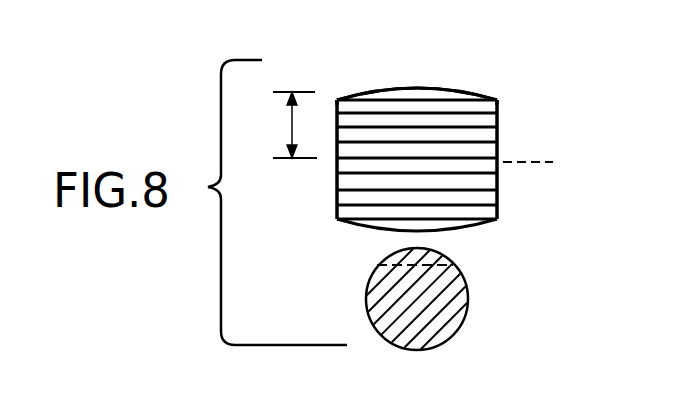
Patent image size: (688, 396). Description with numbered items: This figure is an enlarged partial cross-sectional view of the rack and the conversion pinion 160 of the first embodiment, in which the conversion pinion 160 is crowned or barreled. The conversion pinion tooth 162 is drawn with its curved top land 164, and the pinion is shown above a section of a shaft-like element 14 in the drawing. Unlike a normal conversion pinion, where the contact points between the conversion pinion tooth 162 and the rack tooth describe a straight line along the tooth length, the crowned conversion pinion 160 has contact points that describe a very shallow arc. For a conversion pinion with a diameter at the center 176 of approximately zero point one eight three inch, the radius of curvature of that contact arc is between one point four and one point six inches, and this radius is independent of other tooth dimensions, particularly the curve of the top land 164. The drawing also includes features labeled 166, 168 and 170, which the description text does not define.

The tube 14 is at (464, 306).
The conversion pinion 160 is at (528, 204).
The conversion pinion tooth 162 is at (481, 134).
The top land 164 is at (384, 82).
The reference line 166 is at (553, 162).
The top surface 168 is at (414, 87).
The edges 170 is at (338, 98).
The center 176 is at (292, 127).